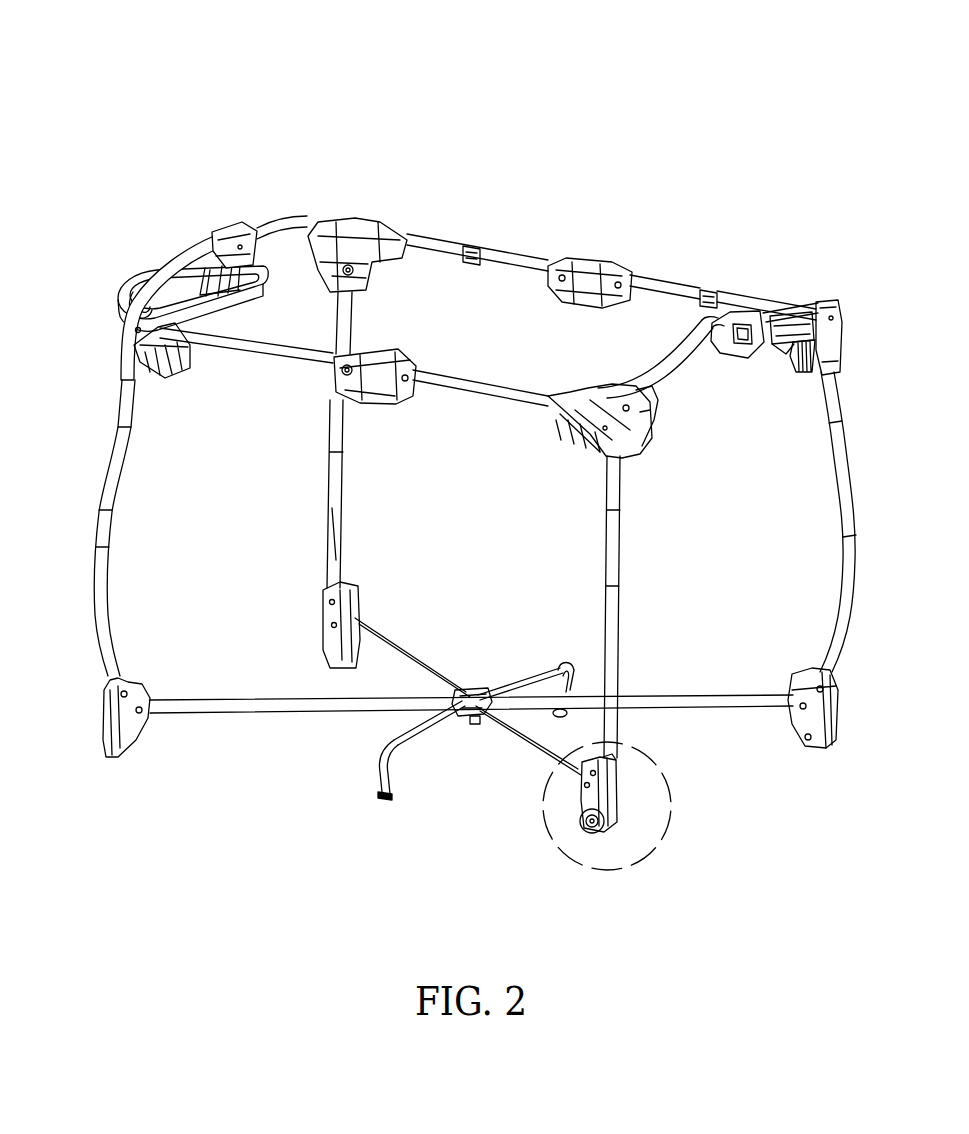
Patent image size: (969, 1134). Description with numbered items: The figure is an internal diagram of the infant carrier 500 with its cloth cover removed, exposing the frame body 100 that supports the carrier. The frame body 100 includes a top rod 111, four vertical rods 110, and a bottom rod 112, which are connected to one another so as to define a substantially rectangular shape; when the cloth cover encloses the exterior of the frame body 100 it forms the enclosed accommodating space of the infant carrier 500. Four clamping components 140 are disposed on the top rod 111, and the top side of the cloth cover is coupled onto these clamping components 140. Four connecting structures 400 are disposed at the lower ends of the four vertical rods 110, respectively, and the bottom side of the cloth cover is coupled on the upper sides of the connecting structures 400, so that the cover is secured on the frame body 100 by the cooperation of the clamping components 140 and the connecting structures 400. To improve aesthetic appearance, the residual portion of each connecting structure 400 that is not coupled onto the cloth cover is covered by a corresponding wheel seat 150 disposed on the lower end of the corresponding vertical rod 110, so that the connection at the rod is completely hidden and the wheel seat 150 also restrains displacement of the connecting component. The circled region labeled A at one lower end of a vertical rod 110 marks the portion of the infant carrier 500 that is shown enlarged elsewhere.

The infant carrier 500 is at (273, 42).
The frame body 100 is at (712, 100).
The clamping component 140 is at (715, 325).
The top rod 111 is at (687, 290).
The bottom rod 112 is at (683, 697).
The vertical rod 110 is at (842, 447).
The wheel seat 150 is at (127, 726).
The connecting structure 400 is at (95, 681).
The A portion A is at (665, 849).